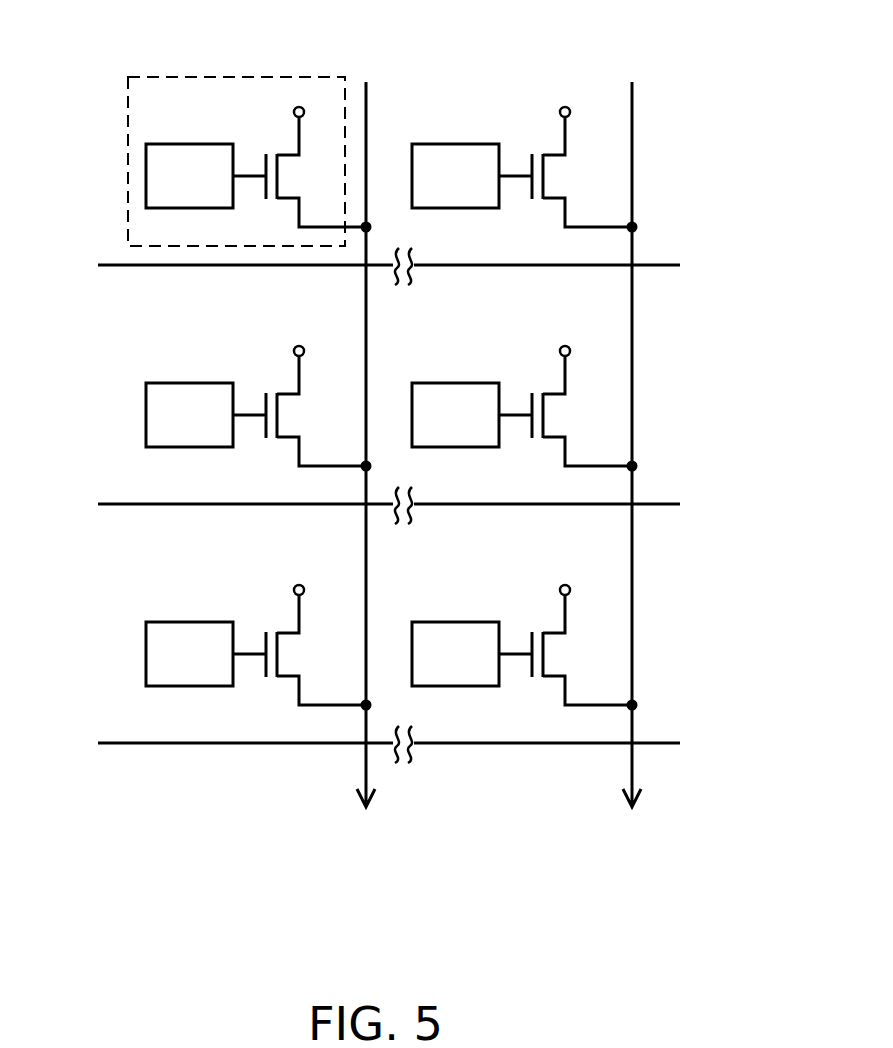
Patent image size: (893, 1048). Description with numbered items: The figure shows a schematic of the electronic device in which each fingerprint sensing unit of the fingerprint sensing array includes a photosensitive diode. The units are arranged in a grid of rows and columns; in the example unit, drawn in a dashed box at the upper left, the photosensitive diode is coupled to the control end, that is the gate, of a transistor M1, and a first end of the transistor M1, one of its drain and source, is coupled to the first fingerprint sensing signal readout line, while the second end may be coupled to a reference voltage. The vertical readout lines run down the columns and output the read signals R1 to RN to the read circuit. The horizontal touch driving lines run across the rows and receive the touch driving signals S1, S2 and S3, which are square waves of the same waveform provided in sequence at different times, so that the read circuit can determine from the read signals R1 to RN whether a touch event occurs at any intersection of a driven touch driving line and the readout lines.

The transistor M1 is at (301, 169).
The touch driving signal S1 is at (685, 238).
The touch driving signal S2 is at (370, 505).
The touch driving signal S3 is at (370, 744).
The read signal R1 is at (366, 834).
The read signal RN is at (632, 834).